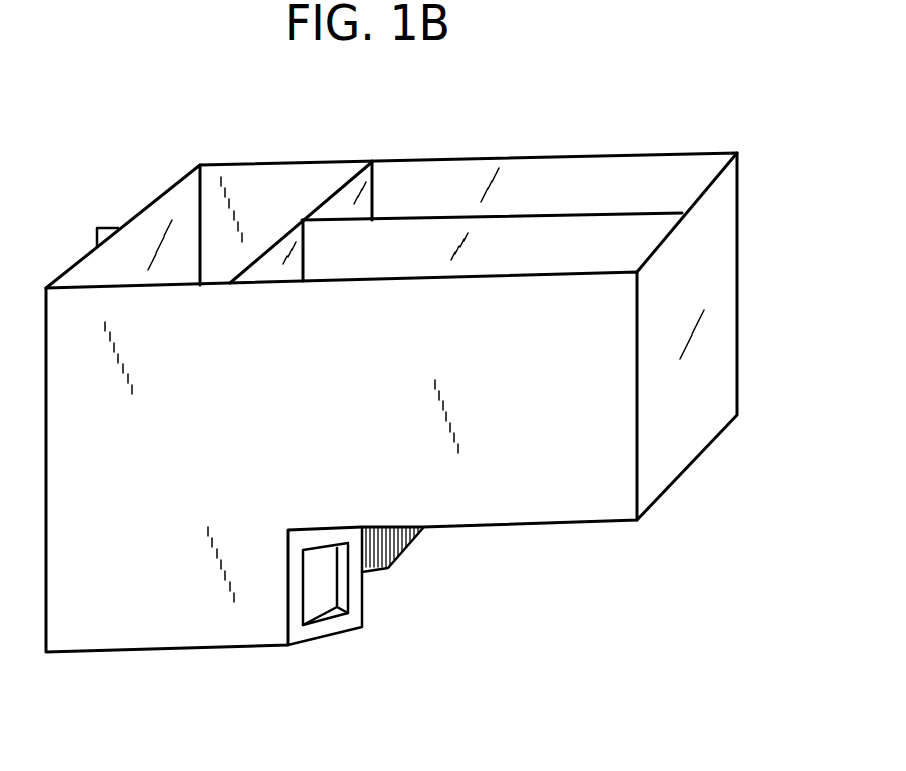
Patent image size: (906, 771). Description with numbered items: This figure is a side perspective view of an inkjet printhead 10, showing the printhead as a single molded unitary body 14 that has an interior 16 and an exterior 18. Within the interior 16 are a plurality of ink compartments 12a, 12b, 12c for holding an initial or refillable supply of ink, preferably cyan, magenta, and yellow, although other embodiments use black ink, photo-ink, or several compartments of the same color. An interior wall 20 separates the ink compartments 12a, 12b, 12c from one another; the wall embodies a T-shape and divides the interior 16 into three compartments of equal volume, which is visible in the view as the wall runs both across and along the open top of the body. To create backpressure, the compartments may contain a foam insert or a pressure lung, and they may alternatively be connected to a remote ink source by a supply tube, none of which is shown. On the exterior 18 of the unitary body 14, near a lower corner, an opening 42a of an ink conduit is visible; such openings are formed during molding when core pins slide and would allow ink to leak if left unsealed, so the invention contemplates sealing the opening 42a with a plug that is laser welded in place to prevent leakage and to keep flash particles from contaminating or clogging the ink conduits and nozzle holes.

The inkjet printhead 10 is at (178, 121).
The ink compartment 12a is at (513, 253).
The ink compartment 12b is at (258, 223).
The ink compartment 12c is at (617, 194).
The unitary body 14 is at (693, 462).
The interior 16 is at (143, 258).
The exterior 18 is at (370, 399).
The interior wall 20 is at (302, 220).
The opening 42a is at (325, 582).